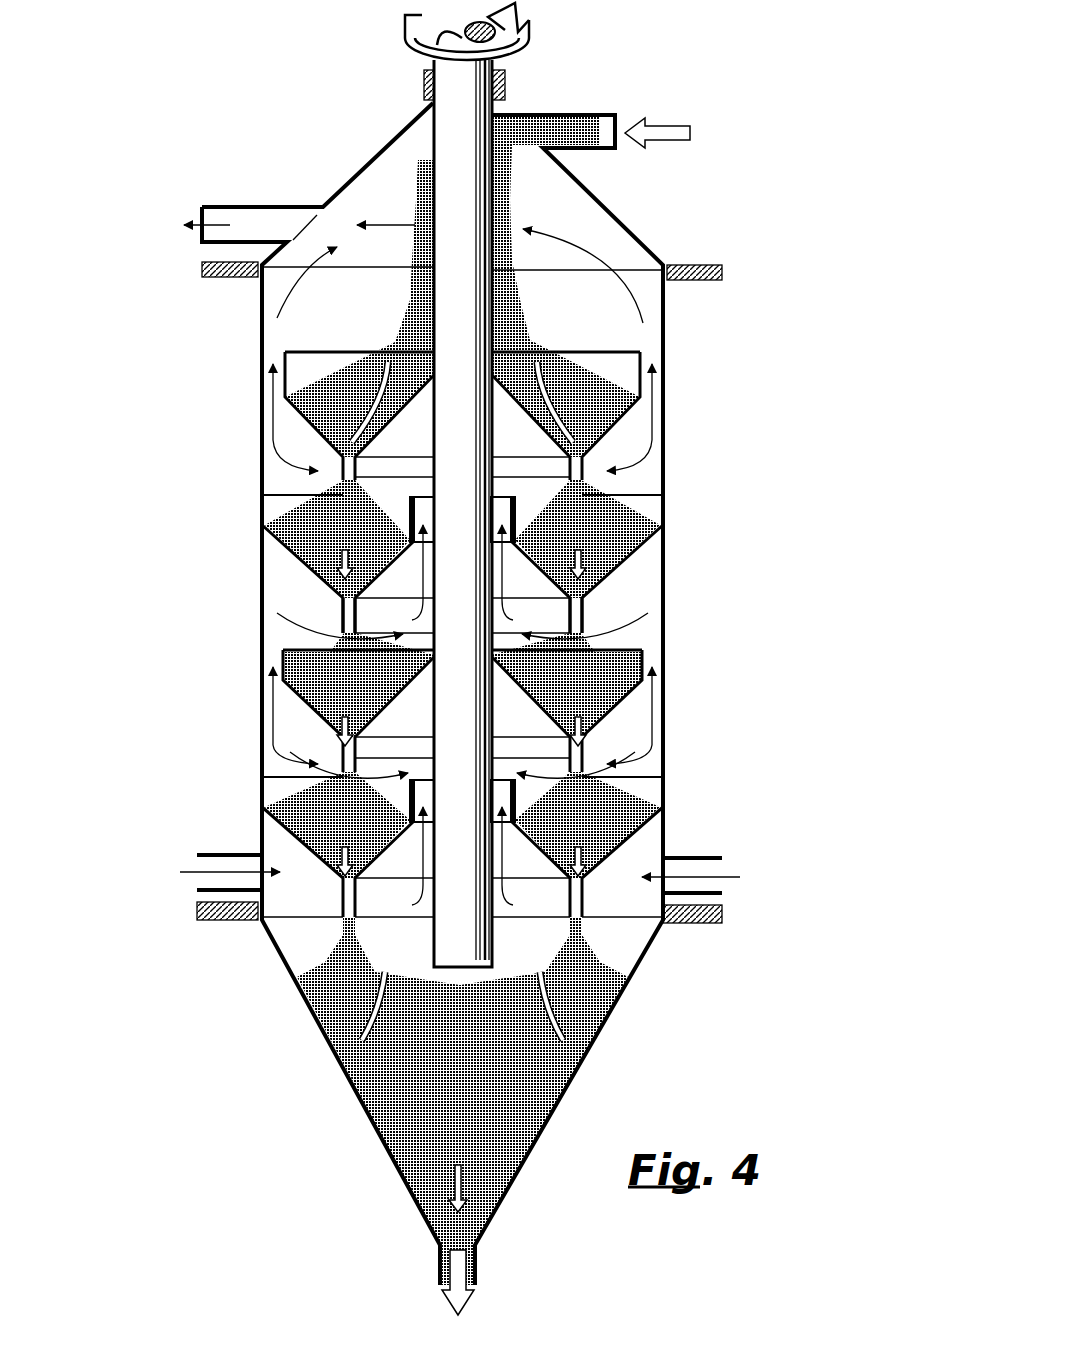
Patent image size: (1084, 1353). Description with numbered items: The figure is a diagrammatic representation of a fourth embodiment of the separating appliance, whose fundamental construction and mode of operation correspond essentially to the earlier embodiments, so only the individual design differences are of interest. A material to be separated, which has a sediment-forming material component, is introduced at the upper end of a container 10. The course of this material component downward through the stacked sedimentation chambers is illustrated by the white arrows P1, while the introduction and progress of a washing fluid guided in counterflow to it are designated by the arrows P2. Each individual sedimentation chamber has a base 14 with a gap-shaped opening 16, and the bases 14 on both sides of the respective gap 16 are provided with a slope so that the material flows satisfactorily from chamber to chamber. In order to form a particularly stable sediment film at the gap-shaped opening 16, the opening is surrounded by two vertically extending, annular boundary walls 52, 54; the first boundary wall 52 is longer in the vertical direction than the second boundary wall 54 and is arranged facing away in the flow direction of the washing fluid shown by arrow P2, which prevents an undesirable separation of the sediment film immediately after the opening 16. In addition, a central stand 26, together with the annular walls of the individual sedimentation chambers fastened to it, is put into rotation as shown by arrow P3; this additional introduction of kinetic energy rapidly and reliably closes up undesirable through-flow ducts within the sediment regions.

The container 10 is at (208, 178).
The central stand 26 is at (480, 117).
The base 14 is at (290, 552).
The gap-shaped opening 16 is at (343, 603).
The second boundary wall 54 is at (583, 607).
The first boundary wall 52 is at (583, 623).
The white arrows P1 is at (692, 135).
The arrows P2 is at (703, 877).
The arrow P3 is at (528, 14).